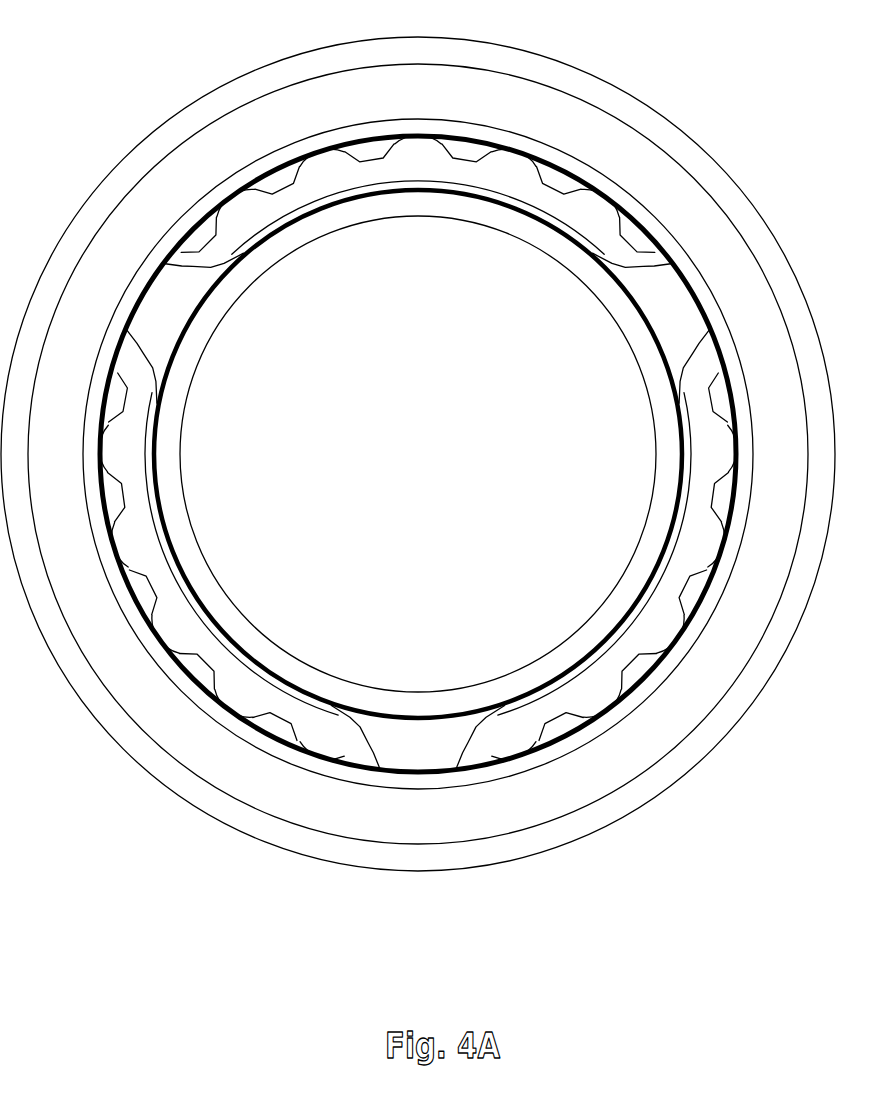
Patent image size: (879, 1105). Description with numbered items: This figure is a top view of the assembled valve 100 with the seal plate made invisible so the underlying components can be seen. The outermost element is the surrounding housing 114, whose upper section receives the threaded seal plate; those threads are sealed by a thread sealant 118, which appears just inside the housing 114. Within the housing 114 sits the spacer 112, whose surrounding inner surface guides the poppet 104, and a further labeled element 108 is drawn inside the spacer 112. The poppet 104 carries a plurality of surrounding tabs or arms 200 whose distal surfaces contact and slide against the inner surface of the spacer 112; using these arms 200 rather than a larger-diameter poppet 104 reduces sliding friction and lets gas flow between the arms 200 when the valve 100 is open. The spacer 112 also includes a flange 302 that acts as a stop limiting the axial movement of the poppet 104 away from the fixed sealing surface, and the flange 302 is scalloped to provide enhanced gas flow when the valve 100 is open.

The valve 100 is at (670, 55).
The poppet 104 is at (430, 468).
The inner ring 108 is at (657, 390).
The spacer 112 is at (658, 672).
The housing 114 is at (622, 818).
The thread sealant 118 is at (762, 308).
The arms 200 is at (163, 308).
The flange 302 is at (687, 596).